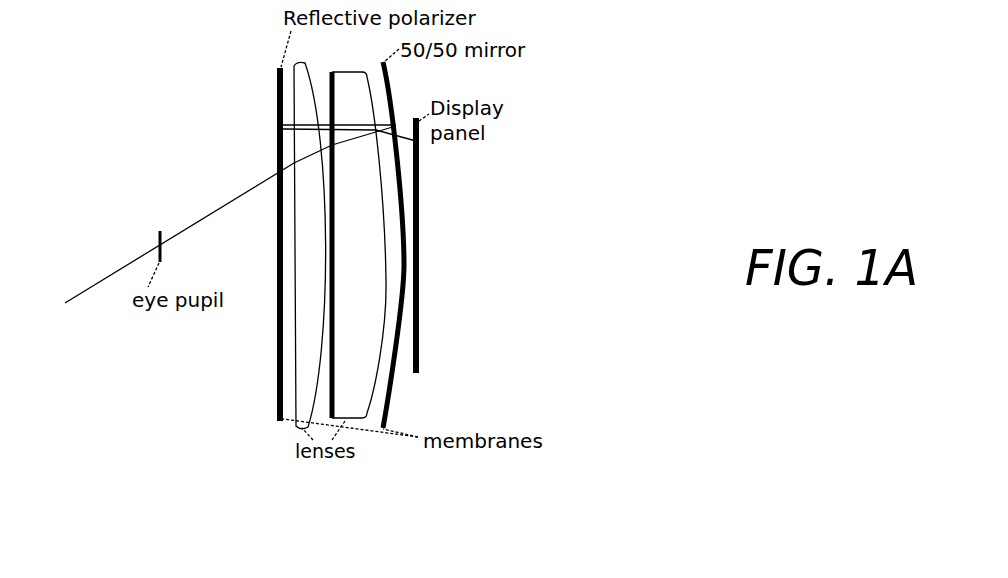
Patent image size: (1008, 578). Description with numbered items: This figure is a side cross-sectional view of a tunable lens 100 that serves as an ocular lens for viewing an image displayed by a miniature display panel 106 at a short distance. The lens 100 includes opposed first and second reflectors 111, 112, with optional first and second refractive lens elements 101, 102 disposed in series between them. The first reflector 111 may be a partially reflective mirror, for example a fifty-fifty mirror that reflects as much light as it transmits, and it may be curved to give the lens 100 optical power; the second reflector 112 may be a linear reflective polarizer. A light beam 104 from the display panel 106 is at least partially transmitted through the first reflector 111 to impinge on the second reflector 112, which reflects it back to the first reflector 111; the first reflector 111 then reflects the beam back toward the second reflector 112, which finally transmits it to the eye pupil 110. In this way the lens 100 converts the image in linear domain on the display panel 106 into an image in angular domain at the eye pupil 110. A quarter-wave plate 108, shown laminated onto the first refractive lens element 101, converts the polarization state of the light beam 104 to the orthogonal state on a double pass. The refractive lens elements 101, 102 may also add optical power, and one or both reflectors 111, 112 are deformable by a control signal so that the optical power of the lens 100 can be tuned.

The lens 100 is at (598, 169).
The first refractive lens element 101 is at (378, 259).
The second refractive lens element 102 is at (330, 259).
The light beam 104 is at (208, 213).
The display panel 106 is at (419, 178).
The quarter-wave plate 108 is at (331, 80).
The eye pupil 110 is at (160, 231).
The first reflector 111 is at (392, 398).
The second reflector 112 is at (277, 372).